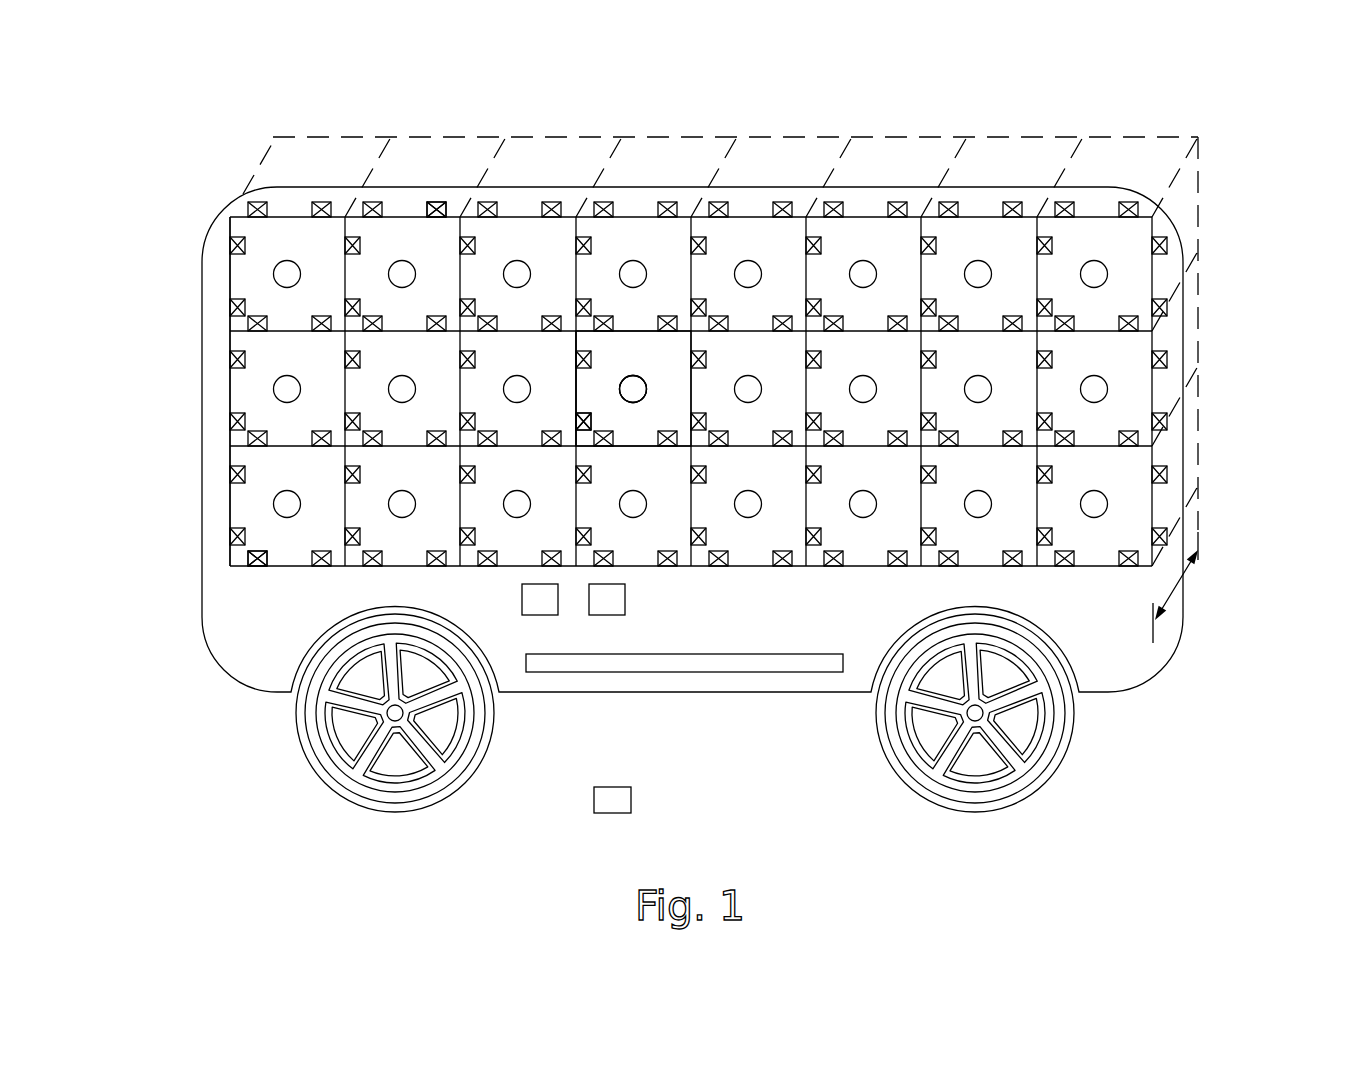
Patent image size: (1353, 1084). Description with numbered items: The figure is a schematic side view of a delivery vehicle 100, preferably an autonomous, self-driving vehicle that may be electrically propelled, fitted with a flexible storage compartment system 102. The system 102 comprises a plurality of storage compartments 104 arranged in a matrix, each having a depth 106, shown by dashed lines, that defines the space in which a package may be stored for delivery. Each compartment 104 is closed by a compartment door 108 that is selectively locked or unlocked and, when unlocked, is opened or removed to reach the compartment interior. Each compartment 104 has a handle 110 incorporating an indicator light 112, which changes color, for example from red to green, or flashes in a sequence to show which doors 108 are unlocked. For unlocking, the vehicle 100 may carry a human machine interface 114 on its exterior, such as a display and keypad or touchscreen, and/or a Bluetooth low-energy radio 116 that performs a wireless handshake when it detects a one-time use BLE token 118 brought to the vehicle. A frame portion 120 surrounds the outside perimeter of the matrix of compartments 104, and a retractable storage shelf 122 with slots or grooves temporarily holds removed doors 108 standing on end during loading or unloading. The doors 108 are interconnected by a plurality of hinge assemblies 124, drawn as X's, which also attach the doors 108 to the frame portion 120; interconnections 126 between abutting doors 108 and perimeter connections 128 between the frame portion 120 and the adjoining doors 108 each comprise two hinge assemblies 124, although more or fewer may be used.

The delivery vehicle 100 is at (196, 205).
The flexible storage compartment system 102 is at (425, 205).
The storage compartments 104 is at (1198, 322).
The depths 106 is at (1177, 582).
The compartment door 108 is at (660, 370).
The handle 110 is at (633, 401).
The indicator light 112 is at (635, 387).
The human machine interface 114 is at (540, 615).
The Bluetooth low-energy radio 116 is at (607, 615).
The BLE token 118 is at (594, 798).
The frame portion 120 is at (267, 572).
The retractable storage shelf 122 is at (683, 672).
The hinge assemblies 124 is at (603, 419).
The interconnections 126 is at (562, 400).
The perimeter connections 128 is at (226, 510).